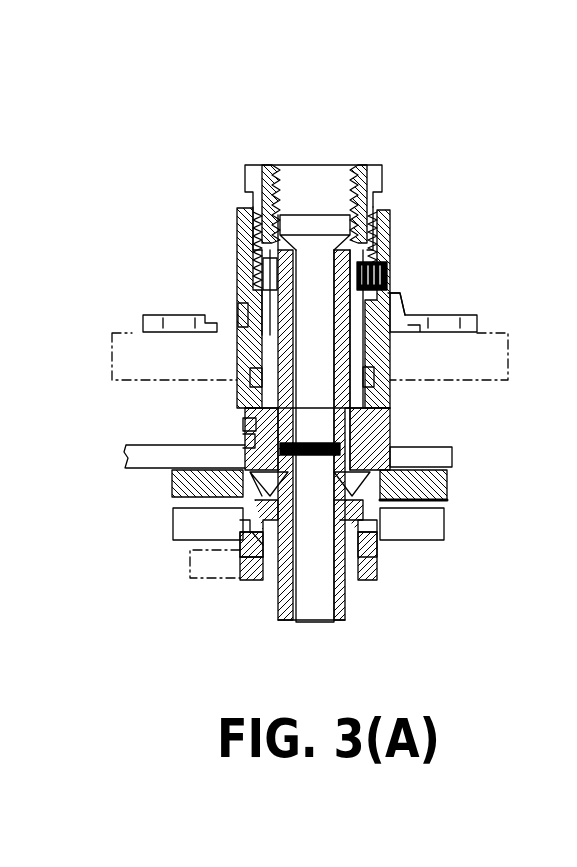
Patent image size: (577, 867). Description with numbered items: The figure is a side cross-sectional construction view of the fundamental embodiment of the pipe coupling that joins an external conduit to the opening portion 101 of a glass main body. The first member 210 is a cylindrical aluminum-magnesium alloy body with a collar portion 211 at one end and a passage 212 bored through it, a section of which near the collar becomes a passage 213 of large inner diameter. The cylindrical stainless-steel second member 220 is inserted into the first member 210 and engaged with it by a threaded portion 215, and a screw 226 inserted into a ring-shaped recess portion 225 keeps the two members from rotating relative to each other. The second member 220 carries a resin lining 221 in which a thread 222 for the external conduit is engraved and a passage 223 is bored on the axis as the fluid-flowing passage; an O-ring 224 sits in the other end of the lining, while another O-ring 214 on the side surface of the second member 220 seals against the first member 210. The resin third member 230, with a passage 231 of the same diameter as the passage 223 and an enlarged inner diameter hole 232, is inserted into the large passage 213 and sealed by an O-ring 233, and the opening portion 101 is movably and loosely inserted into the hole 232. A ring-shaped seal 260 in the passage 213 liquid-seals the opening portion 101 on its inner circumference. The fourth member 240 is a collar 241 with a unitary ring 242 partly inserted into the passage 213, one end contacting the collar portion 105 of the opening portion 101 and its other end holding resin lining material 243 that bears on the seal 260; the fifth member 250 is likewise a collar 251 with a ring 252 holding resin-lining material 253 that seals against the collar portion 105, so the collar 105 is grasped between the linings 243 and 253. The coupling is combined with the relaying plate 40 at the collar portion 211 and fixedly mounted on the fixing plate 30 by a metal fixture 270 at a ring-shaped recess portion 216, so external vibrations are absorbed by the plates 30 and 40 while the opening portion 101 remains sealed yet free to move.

The fixing plate 30 is at (112, 333).
The relaying plate 40 is at (126, 452).
The opening portion 101 is at (300, 466).
The collar portion 105 is at (240, 548).
The first member 210 is at (302, 288).
The collar portion 211 is at (176, 482).
The passage 212 is at (240, 340).
The passage of large inner diameter 213 is at (240, 442).
The O-ring 214 is at (250, 375).
The threaded portion 215 is at (246, 242).
The ring-shaped recess portion 216 is at (240, 310).
The second member 220 is at (298, 157).
The lining 221 is at (258, 166).
The thread 222 is at (268, 165).
The passage 223 is at (311, 240).
The O-ring 224 is at (388, 394).
The ring-shaped recess portion 225 is at (258, 266).
The screw 226 is at (393, 268).
The third member 230 is at (299, 435).
The passage 231 is at (318, 428).
The enlarged inner diameter hole 232 is at (385, 442).
The O-ring 233 is at (243, 423).
The fourth member 240 is at (446, 522).
The collar 241 is at (396, 520).
The ring 242 is at (392, 510).
The resin lining material 243 is at (382, 500).
The fifth member 250 is at (376, 583).
The collar 251 is at (246, 578).
The ring 252 is at (199, 580).
The resin-lining material 253 is at (263, 585).
The ring-shaped seal 260 is at (420, 486).
The metal fixture 270 is at (402, 303).